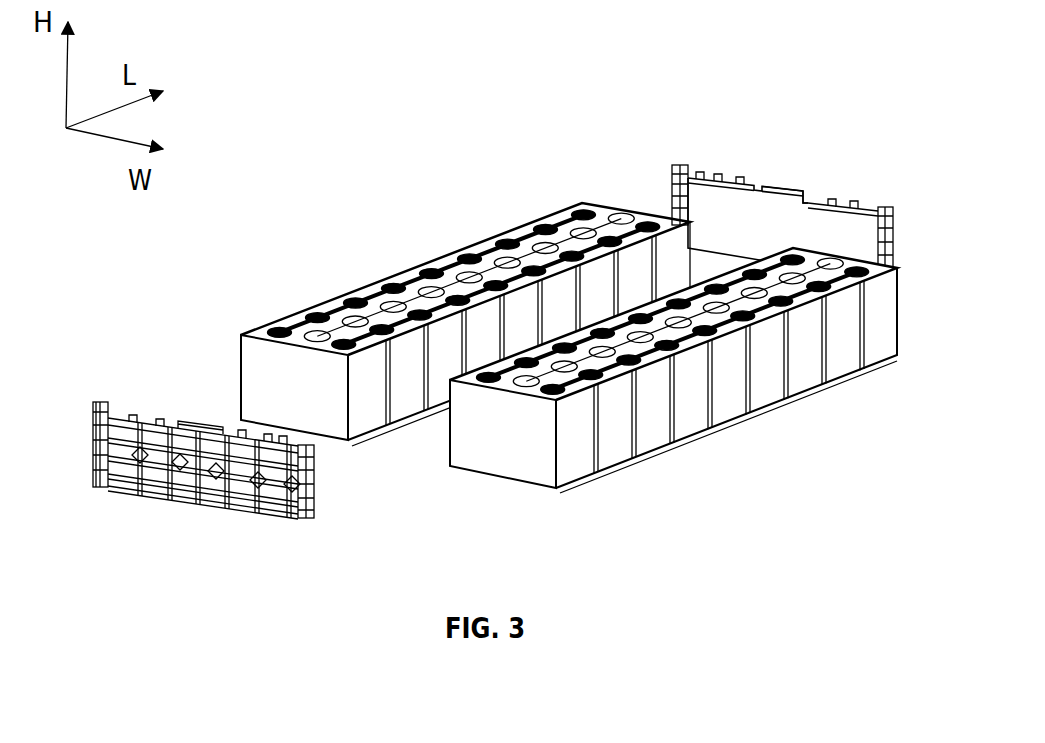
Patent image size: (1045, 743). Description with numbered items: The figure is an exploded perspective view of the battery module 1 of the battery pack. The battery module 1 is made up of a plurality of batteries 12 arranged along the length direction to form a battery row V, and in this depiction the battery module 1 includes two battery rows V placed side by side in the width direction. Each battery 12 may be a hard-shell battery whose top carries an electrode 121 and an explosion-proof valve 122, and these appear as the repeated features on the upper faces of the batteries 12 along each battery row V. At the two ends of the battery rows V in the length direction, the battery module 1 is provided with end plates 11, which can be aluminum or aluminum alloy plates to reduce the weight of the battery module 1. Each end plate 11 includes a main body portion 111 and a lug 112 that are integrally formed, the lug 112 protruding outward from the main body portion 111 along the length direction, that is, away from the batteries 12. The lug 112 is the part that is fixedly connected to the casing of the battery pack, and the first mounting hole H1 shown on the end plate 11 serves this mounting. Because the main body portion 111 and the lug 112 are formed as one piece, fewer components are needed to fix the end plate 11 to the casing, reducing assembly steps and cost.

The battery module 1 is at (412, 111).
The end plate 11 is at (760, 150).
The main body portion 111 is at (795, 186).
The lug 112 is at (90, 461).
The battery 12 is at (256, 301).
The electrode 121 is at (328, 300).
The explosion-proof valve 122 is at (362, 287).
The first mounting hole H1 is at (96, 445).
The battery row V is at (658, 185).